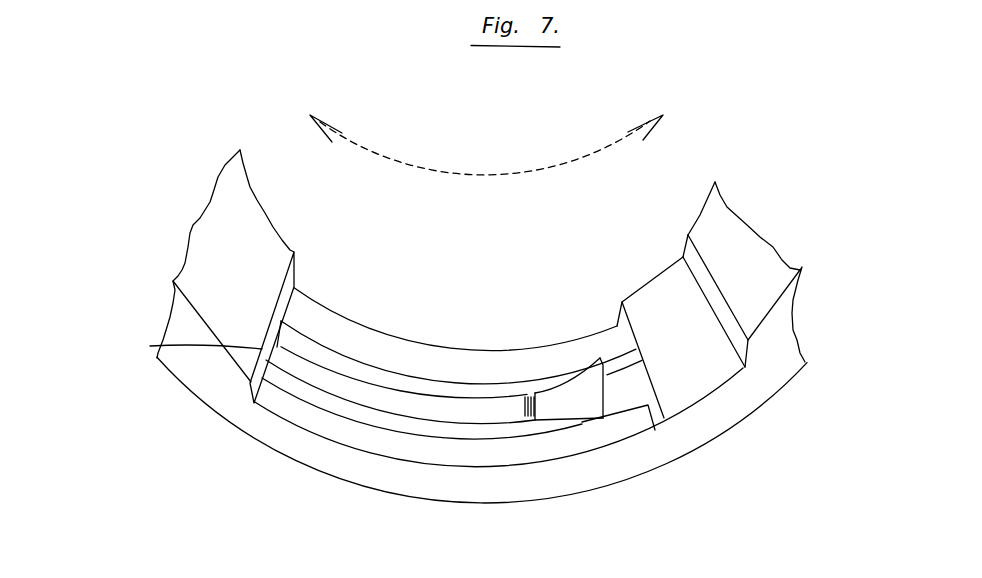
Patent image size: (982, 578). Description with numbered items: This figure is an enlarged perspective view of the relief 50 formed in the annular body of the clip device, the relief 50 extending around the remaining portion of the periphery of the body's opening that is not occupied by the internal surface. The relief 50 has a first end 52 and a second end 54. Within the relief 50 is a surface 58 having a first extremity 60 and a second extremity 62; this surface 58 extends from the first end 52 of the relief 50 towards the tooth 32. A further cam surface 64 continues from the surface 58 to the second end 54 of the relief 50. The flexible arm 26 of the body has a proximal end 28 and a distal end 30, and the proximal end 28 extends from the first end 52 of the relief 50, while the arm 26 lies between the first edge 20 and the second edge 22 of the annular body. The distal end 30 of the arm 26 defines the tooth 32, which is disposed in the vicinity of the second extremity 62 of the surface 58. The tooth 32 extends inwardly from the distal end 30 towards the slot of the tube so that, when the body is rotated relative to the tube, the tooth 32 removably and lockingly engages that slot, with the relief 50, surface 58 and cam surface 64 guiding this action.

The first edge 20 is at (512, 349).
The second edge 22 is at (467, 463).
The flexible arm 26 is at (418, 403).
The proximal end 28 is at (308, 293).
The distal end 30 is at (581, 421).
The tooth 32 is at (590, 378).
The relief 50 is at (443, 173).
The first end 52 is at (289, 268).
The second end 54 is at (707, 265).
The surface 58 is at (343, 428).
The first extremity 60 is at (157, 345).
The second extremity 62 is at (655, 415).
The cam surface 64 is at (690, 340).